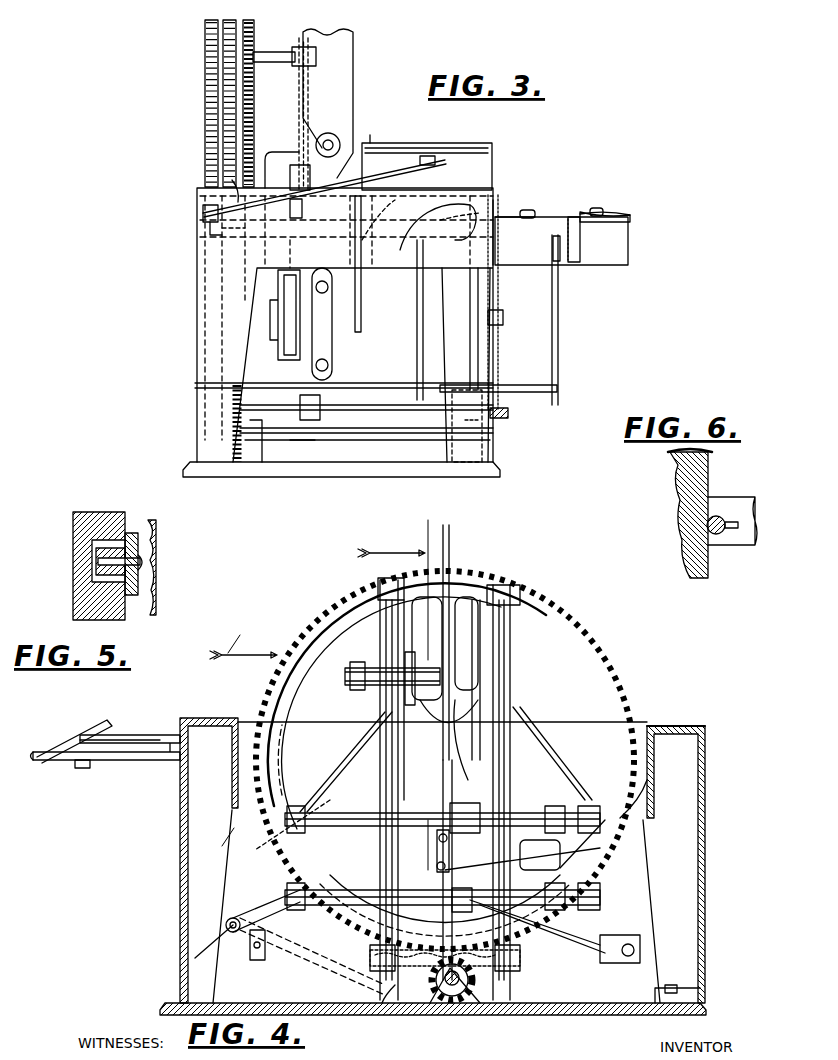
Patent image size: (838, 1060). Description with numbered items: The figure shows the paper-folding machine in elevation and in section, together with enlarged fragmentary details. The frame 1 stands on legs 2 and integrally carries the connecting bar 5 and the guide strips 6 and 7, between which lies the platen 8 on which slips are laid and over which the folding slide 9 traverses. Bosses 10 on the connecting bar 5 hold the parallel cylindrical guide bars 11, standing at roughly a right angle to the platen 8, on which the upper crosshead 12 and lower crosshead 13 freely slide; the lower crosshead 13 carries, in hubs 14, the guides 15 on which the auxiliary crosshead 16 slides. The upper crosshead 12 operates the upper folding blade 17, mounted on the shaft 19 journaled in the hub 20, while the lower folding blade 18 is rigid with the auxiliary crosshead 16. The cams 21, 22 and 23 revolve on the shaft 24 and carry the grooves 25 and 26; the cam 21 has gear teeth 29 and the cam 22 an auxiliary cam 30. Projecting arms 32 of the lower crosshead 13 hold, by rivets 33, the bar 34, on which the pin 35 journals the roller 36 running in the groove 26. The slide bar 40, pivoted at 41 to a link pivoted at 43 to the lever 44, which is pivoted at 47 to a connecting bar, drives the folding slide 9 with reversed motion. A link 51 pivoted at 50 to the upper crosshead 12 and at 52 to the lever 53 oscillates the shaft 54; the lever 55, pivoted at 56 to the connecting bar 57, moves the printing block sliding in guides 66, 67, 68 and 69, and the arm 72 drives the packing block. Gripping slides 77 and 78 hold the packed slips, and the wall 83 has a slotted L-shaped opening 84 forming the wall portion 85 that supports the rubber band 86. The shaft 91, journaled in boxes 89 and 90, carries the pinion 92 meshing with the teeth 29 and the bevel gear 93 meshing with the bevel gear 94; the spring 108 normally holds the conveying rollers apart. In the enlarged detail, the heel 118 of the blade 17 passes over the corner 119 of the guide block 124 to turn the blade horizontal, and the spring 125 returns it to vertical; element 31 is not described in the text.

In FIG. 3, the frame 1 is at (205, 213).
In FIG. 4, the frame 1 is at (705, 765).
In FIG. 3, the legs 2 is at (197, 340).
In FIG. 4, the legs 2 is at (180, 905).
In FIG. 4, the connecting bar 5 is at (630, 732).
In FIG. 3, the guide strip 6 is at (370, 140).
In FIG. 3, the guide strip 7 is at (497, 215).
In FIG. 3, the platen 8 is at (465, 188).
In FIG. 3, the folding slide 9 is at (493, 200).
In FIG. 4, the bosses 10 is at (385, 740).
In FIG. 4, the cylindrical guide bars 11 is at (392, 580).
In FIG. 4, the upper crosshead 12 is at (480, 640).
In FIG. 4, the lower crosshead 13 is at (398, 985).
In FIG. 4, the hubs 14 is at (600, 897).
In FIG. 4, the guides 15 is at (380, 830).
In FIG. 4, the auxiliary crosshead 16 is at (592, 878).
In FIG. 3, the upper folding blade 17 is at (353, 68).
In FIG. 4, the upper folding blade 17 is at (449, 570).
In FIG. 4, the lower folding blade 18 is at (500, 775).
In FIG. 4, the shaft 19 is at (350, 672).
In FIG. 4, the hub 20 is at (360, 668).
In FIG. 3, the cam 21 is at (265, 52).
In FIG. 5, the cam 21 is at (156, 555).
In FIG. 4, the cam 21 is at (585, 628).
In FIG. 3, the cam 22 is at (225, 52).
In FIG. 5, the cam 22 is at (73, 596).
In FIG. 3, the cam 23 is at (205, 78).
In FIG. 3, the shaft 24 is at (225, 228).
In FIG. 4, the groove 25 is at (292, 710).
In FIG. 5, the groove 26 is at (92, 548).
In FIG. 3, the gear teeth 29 is at (243, 116).
In FIG. 4, the gear teeth 29 is at (603, 642).
In FIG. 4, the auxiliary cam 30 is at (560, 868).
In FIG. 3, the block 31 is at (310, 44).
In FIG. 4, the projecting arms 32 is at (250, 940).
In FIG. 4, the rivets 33 is at (640, 950).
In FIG. 5, the bar 34 is at (133, 535).
In FIG. 4, the bar 34 is at (585, 960).
In FIG. 5, the pin 35 is at (140, 568).
In FIG. 5, the roller 36 is at (98, 580).
In FIG. 3, the slide bar 40 is at (210, 225).
In FIG. 4, the slide bar 40 is at (145, 793).
In FIG. 3, the pivot 41 is at (232, 198).
In FIG. 4, the pivot 41 is at (82, 768).
In FIG. 4, the pivot 43 is at (35, 758).
In FIG. 3, the lever 44 is at (208, 206).
In FIG. 4, the lever 44 is at (80, 735).
In FIG. 4, the pivot 47 is at (85, 740).
In FIG. 4, the pivot 50 is at (505, 813).
In FIG. 3, the link 51 is at (278, 305).
In FIG. 4, the link 51 is at (560, 800).
In FIG. 4, the pivot 52 is at (450, 840).
In FIG. 3, the lever 53 is at (260, 348).
In FIG. 4, the lever 53 is at (280, 945).
In FIG. 3, the shaft 54 is at (520, 392).
In FIG. 4, the shaft 54 is at (226, 927).
In FIG. 3, the lever 55 is at (400, 410).
In FIG. 3, the pivot 56 is at (540, 215).
In FIG. 3, the connecting bar 57 is at (525, 210).
In FIG. 3, the guide 66 is at (360, 332).
In FIG. 3, the guide 67 is at (370, 235).
In FIG. 3, the guide 68 is at (405, 240).
In FIG. 3, the guide 69 is at (370, 440).
In FIG. 3, the arm 72 is at (559, 365).
In FIG. 3, the gripping slide 77 is at (598, 209).
In FIG. 3, the gripping slide 78 is at (603, 210).
In FIG. 3, the wall 83 is at (610, 260).
In FIG. 3, the slotted L shaped opening 84 is at (580, 240).
In FIG. 3, the wall 85 is at (558, 262).
In FIG. 3, the rubber band 86 is at (630, 216).
In FIG. 3, the box 89 is at (255, 440).
In FIG. 3, the box 90 is at (440, 462).
In FIG. 3, the shaft 91 is at (330, 440).
In FIG. 4, the shaft 91 is at (462, 1000).
In FIG. 3, the pinion 92 is at (237, 462).
In FIG. 4, the pinion 92 is at (445, 998).
In FIG. 3, the bevel gear 93 is at (460, 450).
In FIG. 3, the bevel gear 94 is at (502, 418).
In FIG. 3, the spring 108 is at (503, 318).
In FIG. 6, the heel 118 is at (710, 490).
In FIG. 6, the corner 119 is at (680, 450).
In FIG. 6, the guide block 124 is at (680, 510).
In FIG. 4, the spring 125 is at (290, 635).